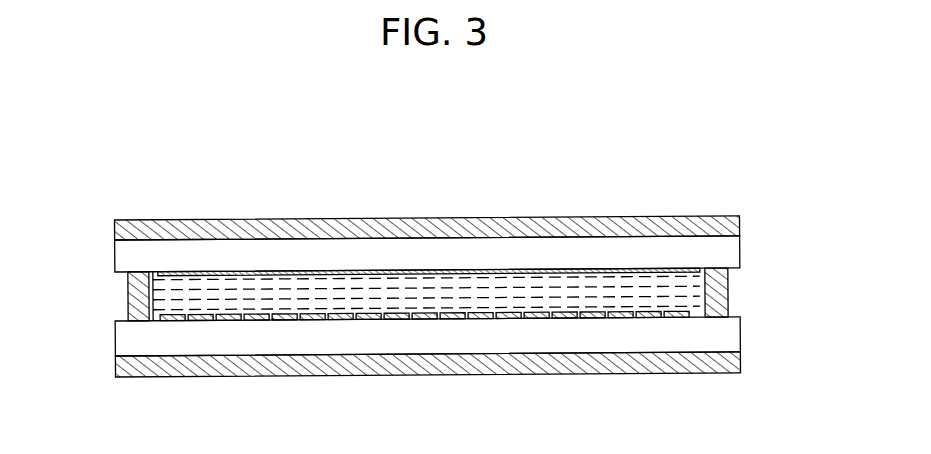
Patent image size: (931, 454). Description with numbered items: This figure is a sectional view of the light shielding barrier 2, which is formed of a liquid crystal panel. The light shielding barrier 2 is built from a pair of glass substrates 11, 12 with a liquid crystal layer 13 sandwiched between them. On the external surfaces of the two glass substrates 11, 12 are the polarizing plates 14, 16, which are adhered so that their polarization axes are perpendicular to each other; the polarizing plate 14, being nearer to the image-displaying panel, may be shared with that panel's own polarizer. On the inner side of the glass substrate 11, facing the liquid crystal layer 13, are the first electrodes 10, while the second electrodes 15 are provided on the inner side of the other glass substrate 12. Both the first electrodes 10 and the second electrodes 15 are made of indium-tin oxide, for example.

The light shielding barrier 2 is at (711, 151).
The first electrodes 10 is at (202, 312).
The glass substrate 11 is at (728, 334).
The glass substrate 12 is at (733, 254).
The liquid crystal layer 13 is at (700, 293).
The polarizing plate 14 is at (728, 363).
The second electrodes 15 is at (168, 278).
The polarizing plate 16 is at (728, 222).